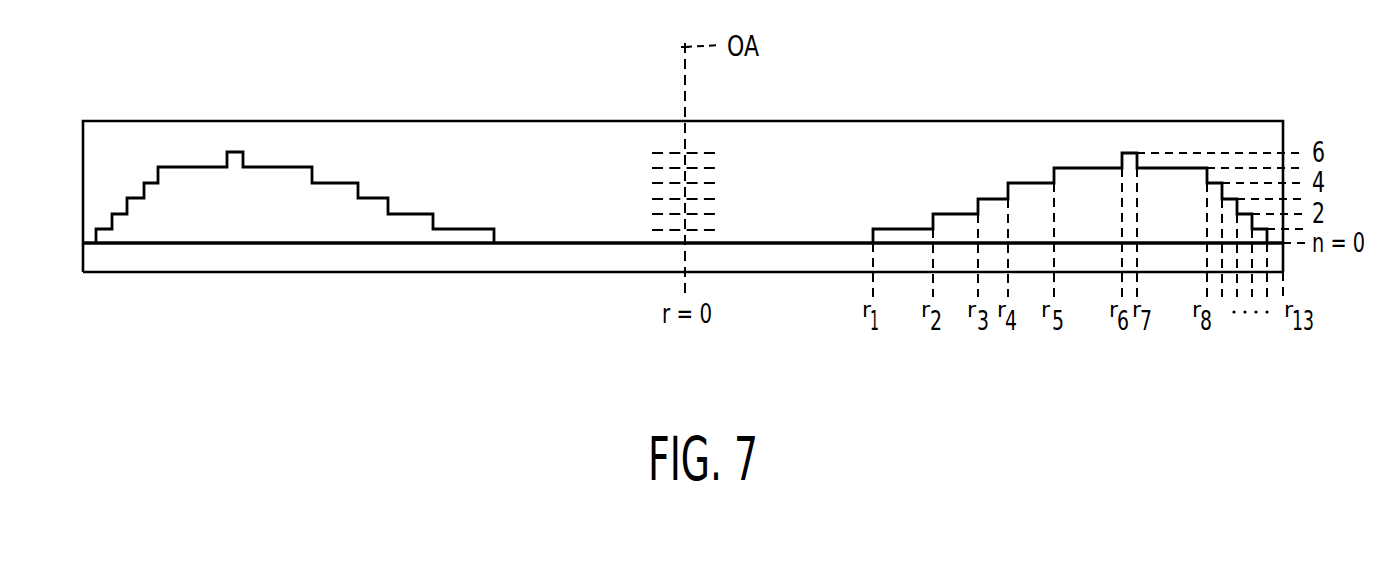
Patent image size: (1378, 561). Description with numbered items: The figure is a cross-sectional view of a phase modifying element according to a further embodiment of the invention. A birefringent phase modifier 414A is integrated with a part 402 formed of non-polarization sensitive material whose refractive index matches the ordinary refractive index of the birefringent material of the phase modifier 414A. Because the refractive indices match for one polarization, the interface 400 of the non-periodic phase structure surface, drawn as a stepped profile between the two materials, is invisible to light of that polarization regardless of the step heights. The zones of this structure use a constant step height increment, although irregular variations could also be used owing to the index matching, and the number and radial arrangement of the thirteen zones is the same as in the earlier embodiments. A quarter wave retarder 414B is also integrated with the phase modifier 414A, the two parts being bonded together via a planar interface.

The part formed of non-polarization sensitive material 402 is at (120, 137).
The interface of the non-periodic phase structure surface 400 is at (333, 182).
The birefringent phase modifier 414A is at (202, 223).
The quarter wave retarder 414B is at (129, 257).